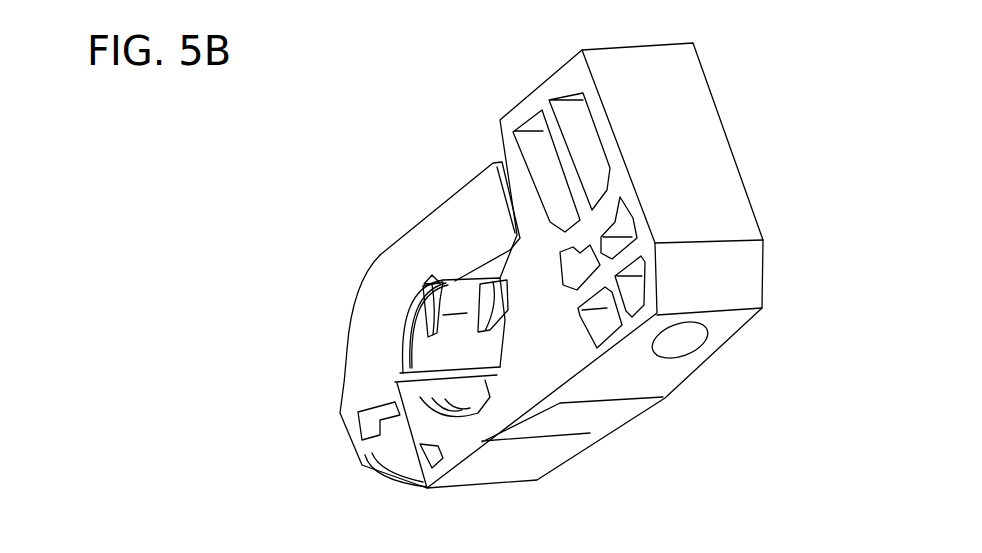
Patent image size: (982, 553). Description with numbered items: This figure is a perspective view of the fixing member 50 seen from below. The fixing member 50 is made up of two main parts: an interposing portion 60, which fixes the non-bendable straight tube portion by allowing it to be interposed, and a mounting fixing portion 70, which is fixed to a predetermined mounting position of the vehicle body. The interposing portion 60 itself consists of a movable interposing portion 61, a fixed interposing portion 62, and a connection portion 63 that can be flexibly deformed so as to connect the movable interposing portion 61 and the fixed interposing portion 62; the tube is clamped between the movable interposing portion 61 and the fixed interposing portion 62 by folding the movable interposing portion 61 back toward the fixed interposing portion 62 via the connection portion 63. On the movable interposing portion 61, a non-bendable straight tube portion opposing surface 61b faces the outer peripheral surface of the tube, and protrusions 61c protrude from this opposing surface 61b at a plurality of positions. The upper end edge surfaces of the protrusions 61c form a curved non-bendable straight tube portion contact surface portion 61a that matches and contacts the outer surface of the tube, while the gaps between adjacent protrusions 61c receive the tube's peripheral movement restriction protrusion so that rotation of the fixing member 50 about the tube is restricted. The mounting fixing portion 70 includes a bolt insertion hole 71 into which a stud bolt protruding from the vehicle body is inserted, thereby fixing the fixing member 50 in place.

The fixing member 50 is at (728, 63).
The interposing portion 60 is at (450, 168).
The movable interposing portion 61 is at (353, 288).
The non-bendable straight tube portion contact surface portion 61a is at (467, 313).
The non-bendable straight tube portion opposing surface 61b is at (427, 340).
The protrusion 61c is at (430, 282).
The fixed interposing portion 62 is at (537, 447).
The connection portion 63 is at (387, 482).
The mounting fixing portion 70 is at (613, 265).
The bolt insertion hole 71 is at (680, 340).